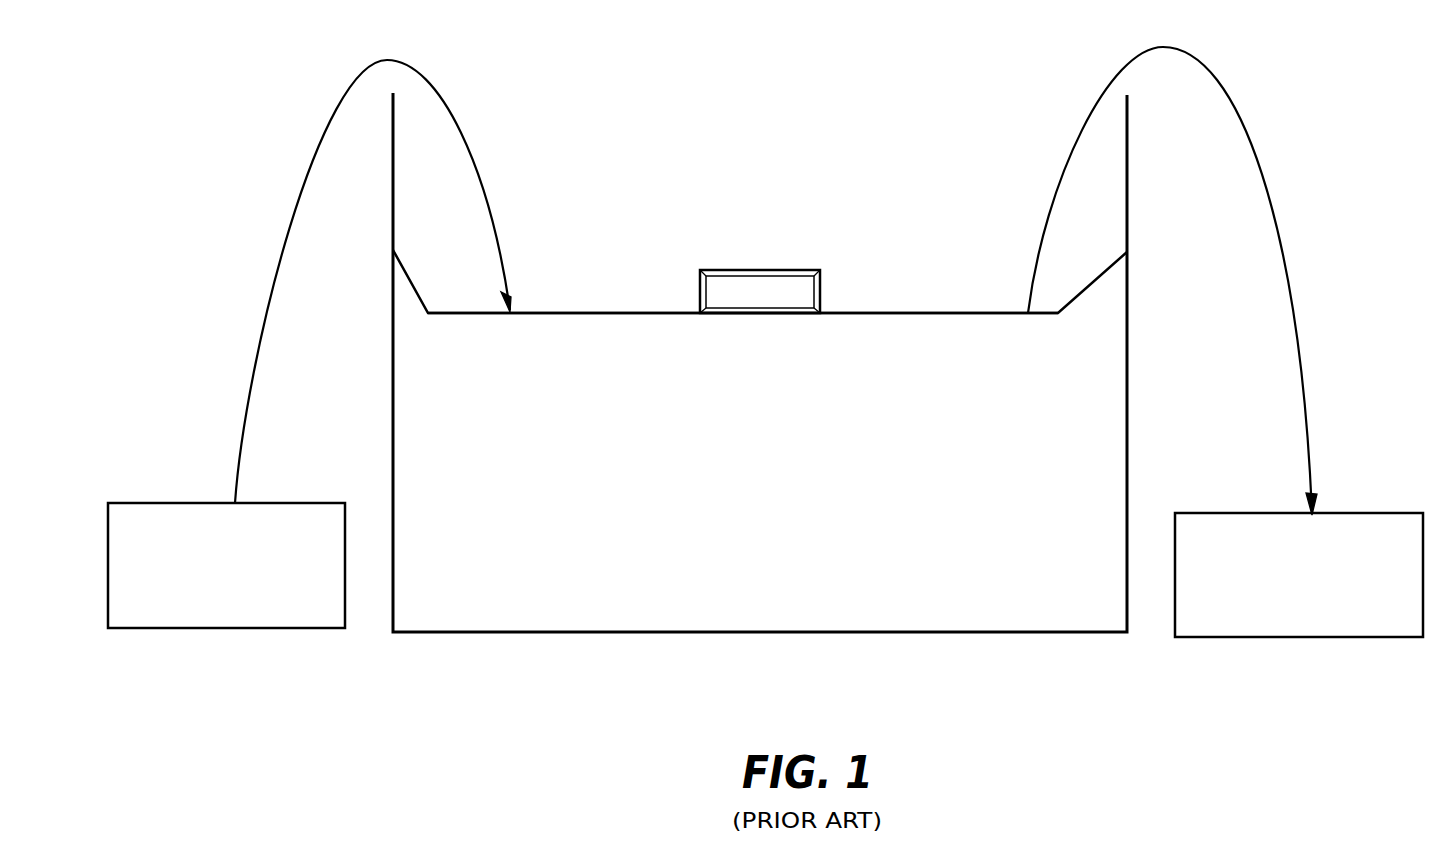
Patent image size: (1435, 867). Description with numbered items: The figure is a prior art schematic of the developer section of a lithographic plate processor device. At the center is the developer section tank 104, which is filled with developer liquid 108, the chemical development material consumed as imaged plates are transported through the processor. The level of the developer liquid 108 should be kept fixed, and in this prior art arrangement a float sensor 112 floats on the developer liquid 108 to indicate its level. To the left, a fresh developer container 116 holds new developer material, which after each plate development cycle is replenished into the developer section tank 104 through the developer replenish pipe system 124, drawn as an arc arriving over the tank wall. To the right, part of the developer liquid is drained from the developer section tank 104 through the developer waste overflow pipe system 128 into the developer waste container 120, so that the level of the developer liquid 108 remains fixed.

The developer section tank 104 is at (500, 638).
The developer liquid 108 is at (1062, 595).
The float sensor 112 is at (762, 270).
The fresh developer container 116 is at (253, 628).
The developer waste container 120 is at (1302, 638).
The developer replenish pipe system 124 is at (248, 363).
The developer waste overflow pipe system 128 is at (1298, 355).